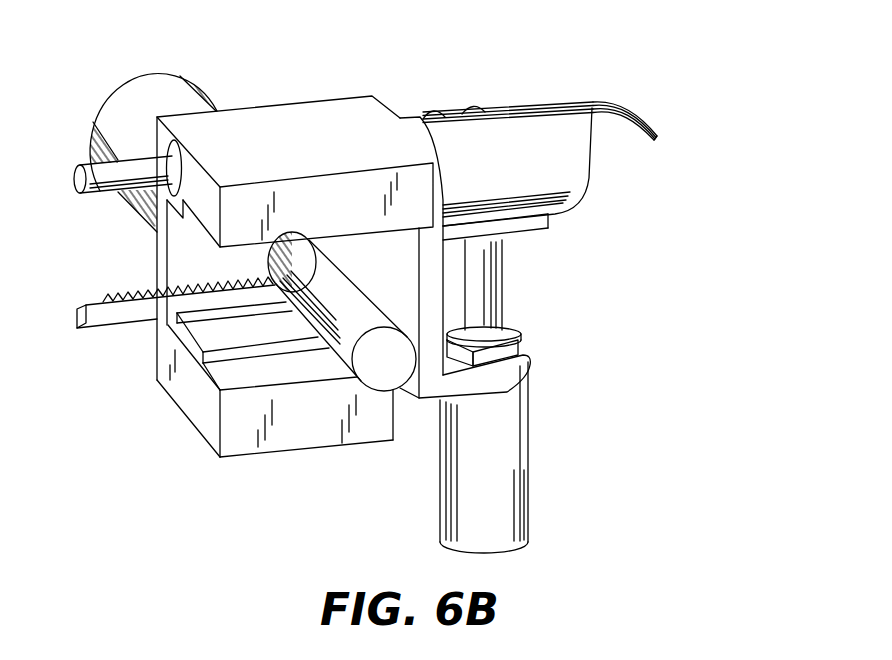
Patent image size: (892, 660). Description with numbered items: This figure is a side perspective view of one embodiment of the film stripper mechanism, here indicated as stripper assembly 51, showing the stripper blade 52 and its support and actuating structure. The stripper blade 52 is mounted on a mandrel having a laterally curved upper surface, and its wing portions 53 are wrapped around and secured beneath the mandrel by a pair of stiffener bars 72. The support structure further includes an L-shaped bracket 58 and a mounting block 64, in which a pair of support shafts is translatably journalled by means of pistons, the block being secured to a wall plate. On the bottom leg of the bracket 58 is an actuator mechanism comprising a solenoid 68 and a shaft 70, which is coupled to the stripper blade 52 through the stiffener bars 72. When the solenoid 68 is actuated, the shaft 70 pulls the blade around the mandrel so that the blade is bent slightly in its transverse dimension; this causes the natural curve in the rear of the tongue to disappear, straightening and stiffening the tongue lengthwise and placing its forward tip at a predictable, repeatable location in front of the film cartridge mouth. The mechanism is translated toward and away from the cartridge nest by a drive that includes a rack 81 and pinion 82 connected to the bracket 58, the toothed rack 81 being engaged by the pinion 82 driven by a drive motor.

The flexible strip 51 is at (544, 100).
The stripper blade 52 is at (646, 112).
The wing portions 53 is at (570, 168).
The L-shaped bracket 58 is at (434, 400).
The mounting block 64 is at (331, 97).
The solenoid 68 is at (530, 450).
The shaft 70 is at (503, 288).
The stiffener bars 72 is at (547, 232).
The rack 81 is at (143, 295).
The pinion 82 is at (262, 260).